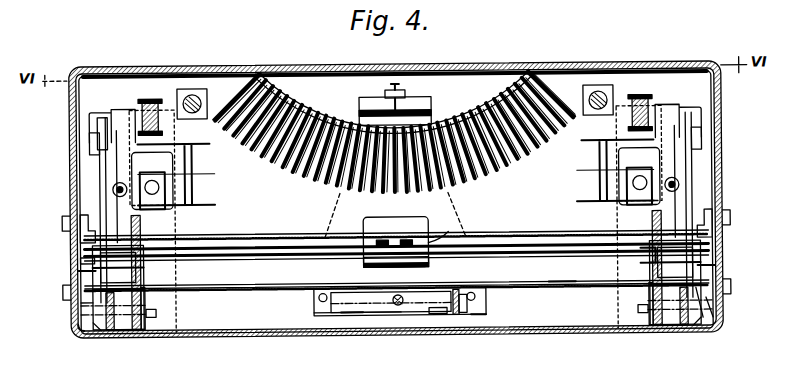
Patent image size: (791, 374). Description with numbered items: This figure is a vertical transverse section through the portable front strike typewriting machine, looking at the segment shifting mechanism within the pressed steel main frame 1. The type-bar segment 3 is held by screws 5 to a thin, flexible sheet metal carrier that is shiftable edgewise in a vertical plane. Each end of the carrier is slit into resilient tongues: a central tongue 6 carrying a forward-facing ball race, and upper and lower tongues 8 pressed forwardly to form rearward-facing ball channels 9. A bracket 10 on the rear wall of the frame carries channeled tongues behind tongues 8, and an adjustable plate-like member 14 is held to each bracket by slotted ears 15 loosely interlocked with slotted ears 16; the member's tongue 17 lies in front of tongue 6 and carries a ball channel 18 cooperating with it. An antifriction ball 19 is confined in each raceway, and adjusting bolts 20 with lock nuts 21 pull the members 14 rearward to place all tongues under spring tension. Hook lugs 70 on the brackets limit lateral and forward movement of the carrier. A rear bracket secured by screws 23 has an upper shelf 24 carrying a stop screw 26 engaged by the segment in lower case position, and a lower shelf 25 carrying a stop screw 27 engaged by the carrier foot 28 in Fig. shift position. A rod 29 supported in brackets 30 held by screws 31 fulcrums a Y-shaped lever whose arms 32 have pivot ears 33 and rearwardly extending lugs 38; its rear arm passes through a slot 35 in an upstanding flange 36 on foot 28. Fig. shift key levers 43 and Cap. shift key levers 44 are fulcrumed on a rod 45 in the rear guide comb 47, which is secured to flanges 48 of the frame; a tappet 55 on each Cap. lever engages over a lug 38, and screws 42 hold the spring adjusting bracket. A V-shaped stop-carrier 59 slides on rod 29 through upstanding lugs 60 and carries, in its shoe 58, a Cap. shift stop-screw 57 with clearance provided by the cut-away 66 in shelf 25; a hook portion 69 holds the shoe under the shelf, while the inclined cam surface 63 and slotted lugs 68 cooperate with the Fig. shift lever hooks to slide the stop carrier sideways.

The main frame 1 is at (77, 98).
The segment 3 is at (258, 72).
The screws 5 is at (195, 100).
The central tongues 6 is at (205, 200).
The upper and lower tongues 8 is at (148, 72).
The ball channel 9 is at (158, 100).
The bracket 10 is at (105, 160).
The plate-like member 14 is at (99, 180).
The slotted ears 15 is at (89, 140).
The slotted ears 16 is at (99, 142).
The tongue 17 is at (175, 150).
The ball channel 18 is at (155, 188).
The antifriction ball 19 is at (97, 200).
The adjusting bolts 20 is at (122, 180).
The lock nuts 21 is at (112, 187).
The screws 23 is at (318, 297).
The shelf portion 24 is at (420, 105).
The shelf portion 25 is at (482, 318).
The stop screw 26 is at (385, 100).
The stop screw 27 is at (436, 316).
The foot 28 is at (363, 270).
The rod 29 is at (258, 260).
The brackets 30 is at (79, 218).
The screws 31 is at (68, 238).
The arms 32 is at (290, 235).
The pivot ears 33 is at (77, 268).
The slot 35 is at (430, 240).
The upstanding flange 36 is at (400, 228).
The lugs 38 is at (145, 278).
The screws 42 is at (80, 330).
The Fig. shift key levers 43 is at (143, 326).
The Cap. shift key levers 44 is at (110, 326).
The rod 45 is at (156, 311).
The rear key lever guide comb 47 is at (712, 322).
The flanges 48 is at (95, 328).
The tappet 55 is at (700, 322).
The Cap. shift stop-screw 57 is at (395, 315).
The shoe 58 is at (335, 315).
The stop-carrier 59 is at (572, 286).
The upstanding lugs 60 is at (79, 300).
The cam surface 63 is at (79, 258).
The cut away 66 is at (456, 318).
The lugs 68 is at (135, 250).
The hook portion 69 is at (466, 316).
The hook lugs 70 is at (125, 108).